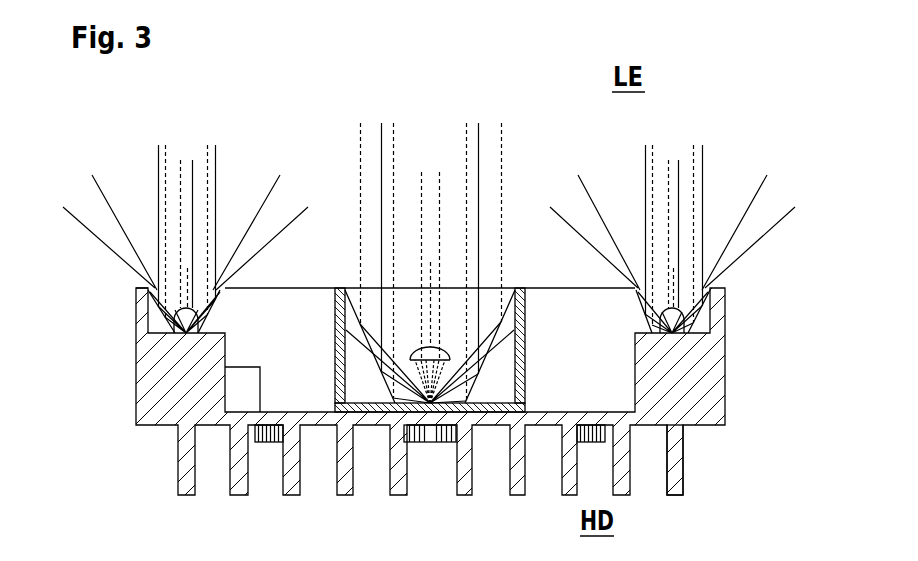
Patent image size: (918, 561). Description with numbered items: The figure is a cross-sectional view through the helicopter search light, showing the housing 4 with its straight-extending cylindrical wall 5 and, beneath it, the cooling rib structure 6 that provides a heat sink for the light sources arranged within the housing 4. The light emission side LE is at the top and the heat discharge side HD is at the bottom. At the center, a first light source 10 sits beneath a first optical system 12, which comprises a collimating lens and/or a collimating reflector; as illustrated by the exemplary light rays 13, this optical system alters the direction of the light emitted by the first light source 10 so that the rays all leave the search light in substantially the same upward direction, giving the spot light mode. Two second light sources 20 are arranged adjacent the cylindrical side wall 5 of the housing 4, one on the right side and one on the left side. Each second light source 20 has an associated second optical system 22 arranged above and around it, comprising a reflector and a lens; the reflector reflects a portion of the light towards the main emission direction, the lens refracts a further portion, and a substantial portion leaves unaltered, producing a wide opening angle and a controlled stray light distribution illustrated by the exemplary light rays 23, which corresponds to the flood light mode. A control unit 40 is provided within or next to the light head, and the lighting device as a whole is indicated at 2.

The lighting device 2 is at (101, 301).
The housing 4 is at (742, 430).
The cylindrical wall 5 is at (721, 315).
The cooling rib structure 6 is at (676, 470).
The first light source 10 is at (430, 406).
The first optical system 12 is at (370, 345).
The light rays 13 is at (527, 133).
The second light source 20 is at (186, 334).
The second optical system 22 is at (221, 318).
The light rays 23 is at (252, 132).
The control unit 40 is at (242, 374).